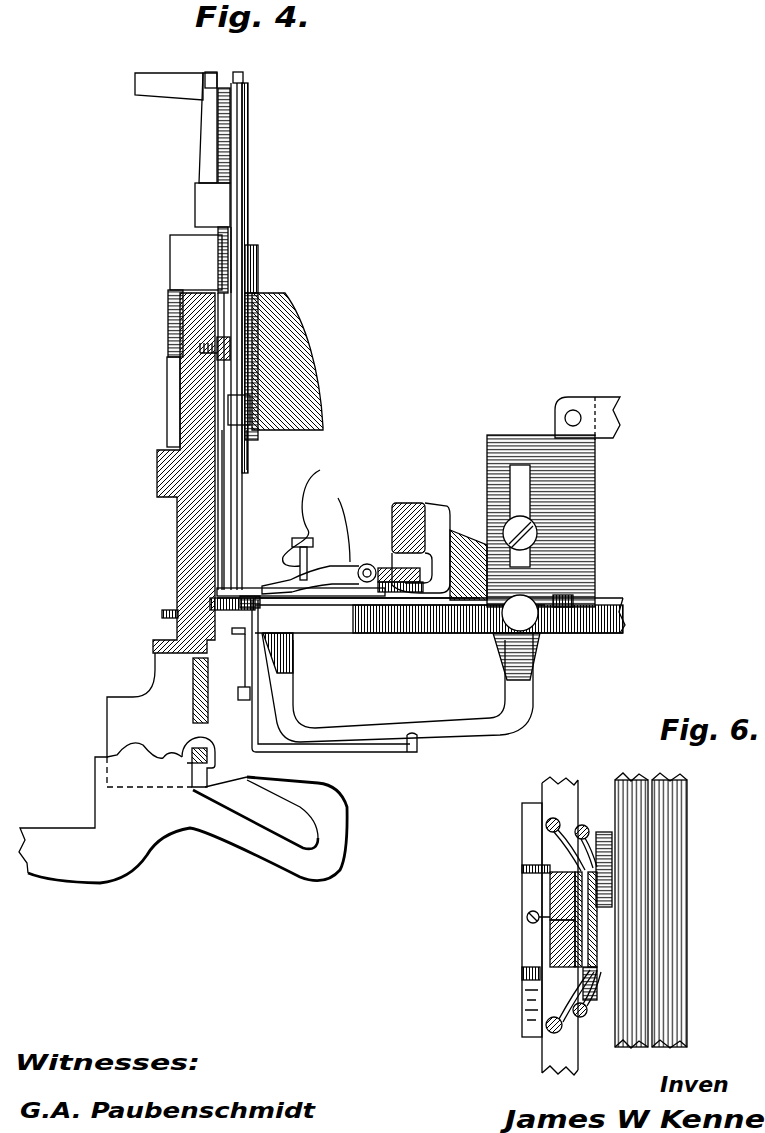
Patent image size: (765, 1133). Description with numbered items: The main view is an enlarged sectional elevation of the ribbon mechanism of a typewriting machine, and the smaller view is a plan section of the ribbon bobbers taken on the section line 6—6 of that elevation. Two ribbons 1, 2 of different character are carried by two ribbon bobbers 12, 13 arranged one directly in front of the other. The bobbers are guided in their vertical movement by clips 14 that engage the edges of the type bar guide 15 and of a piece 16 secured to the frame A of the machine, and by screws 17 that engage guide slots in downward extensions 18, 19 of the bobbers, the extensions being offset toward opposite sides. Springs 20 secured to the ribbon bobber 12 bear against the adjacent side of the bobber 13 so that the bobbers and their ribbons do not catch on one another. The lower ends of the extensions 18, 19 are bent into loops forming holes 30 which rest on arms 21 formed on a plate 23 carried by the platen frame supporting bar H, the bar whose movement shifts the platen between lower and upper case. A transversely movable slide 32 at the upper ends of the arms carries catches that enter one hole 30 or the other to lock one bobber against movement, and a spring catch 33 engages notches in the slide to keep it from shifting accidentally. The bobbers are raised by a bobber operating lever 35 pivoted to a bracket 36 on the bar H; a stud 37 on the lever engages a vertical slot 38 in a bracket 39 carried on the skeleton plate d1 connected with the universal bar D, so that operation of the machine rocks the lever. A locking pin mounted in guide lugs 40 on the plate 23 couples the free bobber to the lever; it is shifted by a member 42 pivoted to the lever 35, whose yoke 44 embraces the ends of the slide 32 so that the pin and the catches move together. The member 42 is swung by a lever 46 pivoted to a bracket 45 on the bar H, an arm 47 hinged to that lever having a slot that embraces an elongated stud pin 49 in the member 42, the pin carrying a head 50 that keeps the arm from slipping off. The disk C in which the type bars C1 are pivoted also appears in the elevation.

In FIG. 4, the ribbon 1 is at (235, 140).
In FIG. 4, the ribbon 2 is at (248, 173).
In FIG. 4, the section line 6— 6 is at (180, 148).
In FIG. 4, the ribbon bobber 12 is at (218, 122).
In FIG. 6, the ribbon bobber 12 is at (577, 845).
In FIG. 4, the ribbon bobber 13 is at (243, 233).
In FIG. 6, the ribbon bobber 13 is at (595, 858).
In FIG. 4, the clips 14 is at (183, 270).
In FIG. 6, the clips 14 is at (603, 833).
In FIG. 4, the type bar guide 15 is at (193, 223).
In FIG. 6, the type bar guide 15 is at (550, 942).
In FIG. 4, the piece secured to the machine frame 16 is at (258, 258).
In FIG. 4, the screws 17 is at (200, 355).
In FIG. 4, the downward extension 18 is at (218, 468).
In FIG. 4, the downward extension 19 is at (243, 443).
In FIG. 4, the springs 20 is at (248, 157).
In FIG. 6, the springs 20 is at (600, 885).
In FIG. 4, the arm 21 is at (293, 637).
In FIG. 4, the plate 23 is at (372, 753).
In FIG. 4, the holes or openings 30 is at (217, 597).
In FIG. 4, the slide 32 is at (177, 630).
In FIG. 4, the spring catch 33 is at (247, 682).
In FIG. 4, the bobber operating lever 35 is at (463, 730).
In FIG. 4, the bracket 36 is at (474, 530).
In FIG. 4, the stud 37 is at (540, 542).
In FIG. 4, the vertical slot 38 is at (595, 490).
In FIG. 4, the bracket 39 is at (523, 443).
In FIG. 4, the guide lugs 40 is at (247, 588).
In FIG. 4, the member 42 is at (333, 522).
In FIG. 4, the yoke 44 is at (210, 598).
In FIG. 4, the bracket 45 is at (437, 523).
In FIG. 4, the lever 46 is at (383, 563).
In FIG. 4, the arm 47 is at (319, 567).
In FIG. 4, the stud pin 49 is at (300, 542).
In FIG. 4, the head 50 is at (326, 512).
In FIG. 4, the frame of the machine A is at (297, 335).
In FIG. 4, the platen frame supporting rod or bar H is at (413, 503).
In FIG. 4, the disk C is at (177, 527).
In FIG. 4, the type bars C1 is at (143, 857).
In FIG. 4, the universal bar D is at (222, 693).
In FIG. 4, the skeleton plate d1 is at (600, 630).